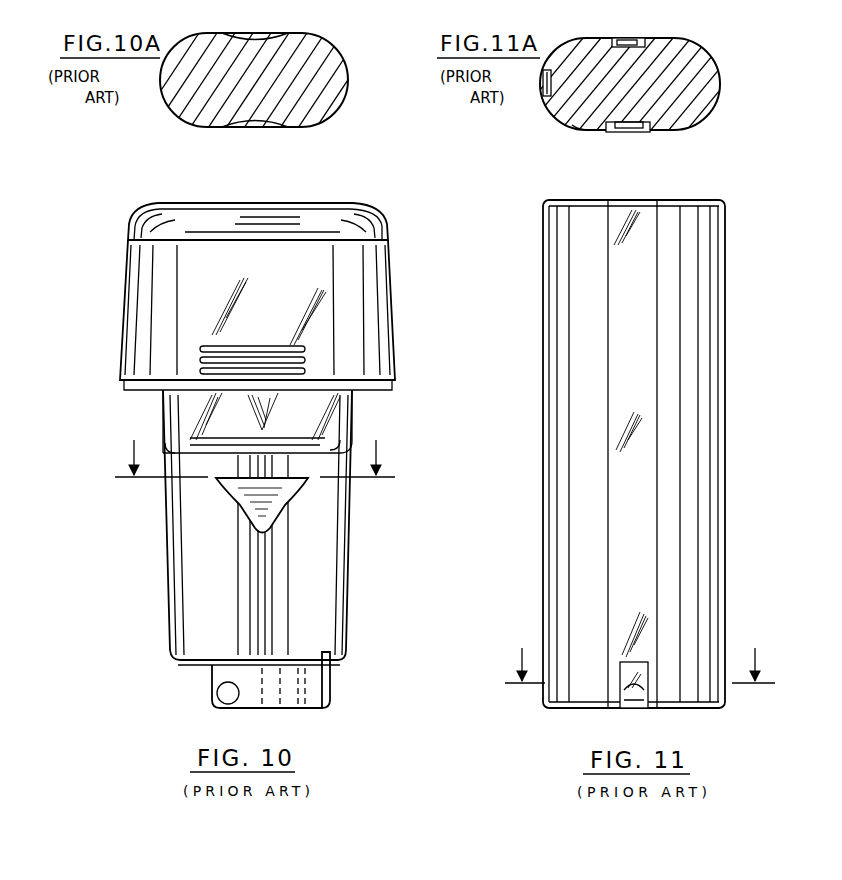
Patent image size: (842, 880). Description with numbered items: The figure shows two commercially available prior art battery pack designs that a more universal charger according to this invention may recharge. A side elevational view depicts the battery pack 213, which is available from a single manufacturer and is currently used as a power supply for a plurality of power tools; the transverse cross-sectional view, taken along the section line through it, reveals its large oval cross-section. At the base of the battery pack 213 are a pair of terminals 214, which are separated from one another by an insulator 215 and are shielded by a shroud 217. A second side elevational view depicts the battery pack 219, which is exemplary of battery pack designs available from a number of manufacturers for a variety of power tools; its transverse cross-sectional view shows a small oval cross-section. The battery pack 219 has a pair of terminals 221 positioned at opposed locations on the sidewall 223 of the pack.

In FIG. 10A, the battery pack 213 is at (353, 101).
In FIG. 10, the battery pack 213 is at (402, 280).
In FIG. 10, the terminals 214 is at (250, 713).
In FIG. 10, the insulator 215 is at (290, 712).
In FIG. 10, the shroud 217 is at (333, 690).
In FIG. 11A, the battery pack 219 is at (724, 83).
In FIG. 11, the battery pack 219 is at (731, 343).
In FIG. 11A, the terminals 221 is at (640, 38).
In FIG. 11, the terminals 221 is at (640, 703).
In FIG. 11A, the sidewall 223 is at (585, 135).